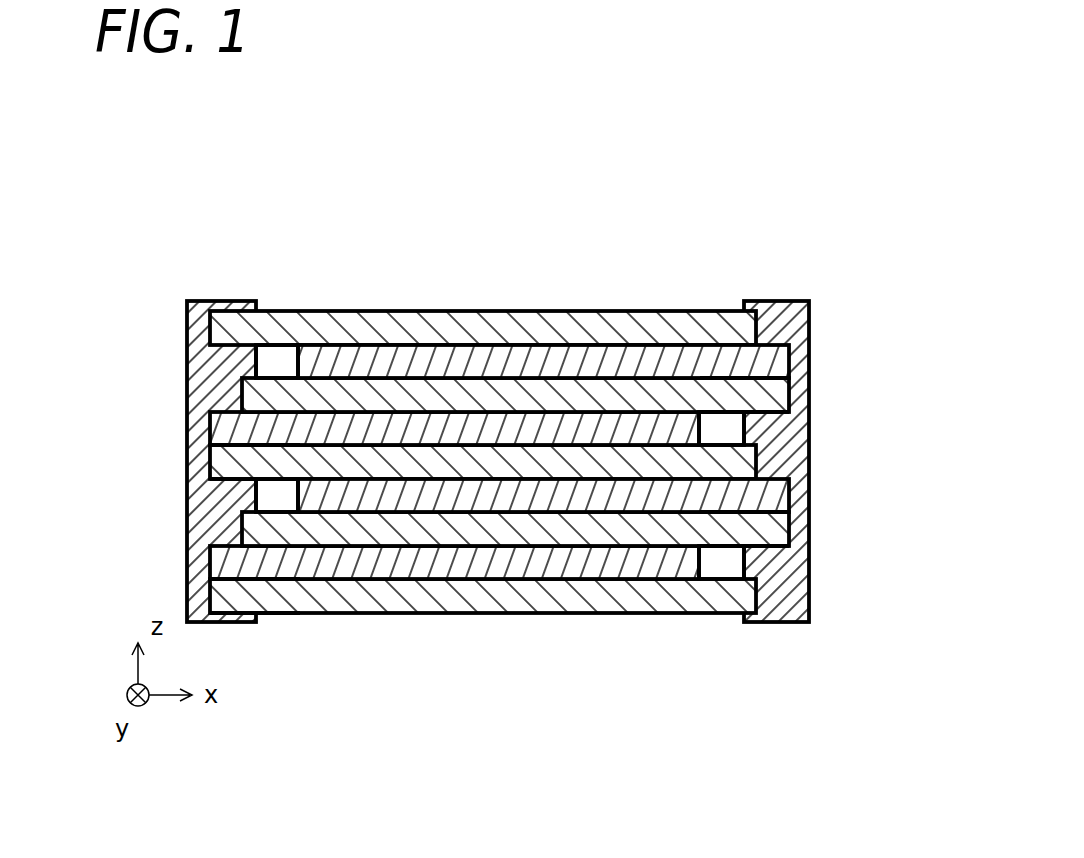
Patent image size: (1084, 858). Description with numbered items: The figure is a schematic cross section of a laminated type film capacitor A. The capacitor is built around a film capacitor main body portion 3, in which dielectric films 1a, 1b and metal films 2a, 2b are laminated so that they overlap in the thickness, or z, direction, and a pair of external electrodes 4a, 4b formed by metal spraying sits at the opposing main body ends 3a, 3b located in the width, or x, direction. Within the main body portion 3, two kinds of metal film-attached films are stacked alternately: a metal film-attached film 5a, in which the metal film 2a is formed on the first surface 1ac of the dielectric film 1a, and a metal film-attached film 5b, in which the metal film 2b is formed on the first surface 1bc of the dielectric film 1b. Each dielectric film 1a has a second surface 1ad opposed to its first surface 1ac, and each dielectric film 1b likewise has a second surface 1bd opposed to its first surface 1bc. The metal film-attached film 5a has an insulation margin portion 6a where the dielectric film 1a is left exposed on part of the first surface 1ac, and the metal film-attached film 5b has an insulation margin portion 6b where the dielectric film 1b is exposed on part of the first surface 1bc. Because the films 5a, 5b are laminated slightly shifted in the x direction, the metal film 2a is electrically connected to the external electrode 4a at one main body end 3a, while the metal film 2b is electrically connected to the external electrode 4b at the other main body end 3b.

The laminated type film capacitor A is at (803, 147).
The film capacitor main body portion 3 is at (322, 147).
The main body end 3a is at (232, 264).
The main body end 3b is at (767, 264).
The external electrode 4a is at (218, 368).
The external electrode 4b is at (760, 343).
The metal film-attached film 5a is at (310, 212).
The metal film-attached film 5b is at (500, 212).
The dielectric film 1a is at (465, 587).
The dielectric film 1b is at (565, 533).
The metal film 2a is at (377, 567).
The metal film 2b is at (665, 500).
The first surface 1ac is at (270, 442).
The second surface 1ad is at (257, 483).
The first surface 1bc is at (730, 378).
The second surface 1bd is at (748, 422).
The insulation margin portion 6a is at (715, 440).
The insulation margin portion 6b is at (277, 373).